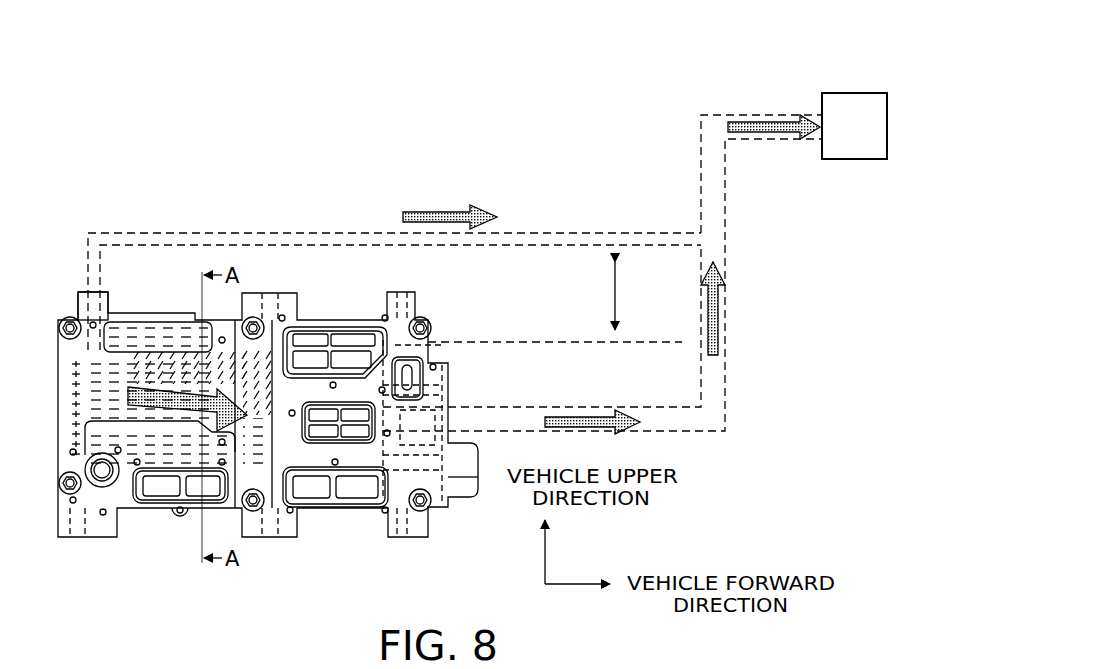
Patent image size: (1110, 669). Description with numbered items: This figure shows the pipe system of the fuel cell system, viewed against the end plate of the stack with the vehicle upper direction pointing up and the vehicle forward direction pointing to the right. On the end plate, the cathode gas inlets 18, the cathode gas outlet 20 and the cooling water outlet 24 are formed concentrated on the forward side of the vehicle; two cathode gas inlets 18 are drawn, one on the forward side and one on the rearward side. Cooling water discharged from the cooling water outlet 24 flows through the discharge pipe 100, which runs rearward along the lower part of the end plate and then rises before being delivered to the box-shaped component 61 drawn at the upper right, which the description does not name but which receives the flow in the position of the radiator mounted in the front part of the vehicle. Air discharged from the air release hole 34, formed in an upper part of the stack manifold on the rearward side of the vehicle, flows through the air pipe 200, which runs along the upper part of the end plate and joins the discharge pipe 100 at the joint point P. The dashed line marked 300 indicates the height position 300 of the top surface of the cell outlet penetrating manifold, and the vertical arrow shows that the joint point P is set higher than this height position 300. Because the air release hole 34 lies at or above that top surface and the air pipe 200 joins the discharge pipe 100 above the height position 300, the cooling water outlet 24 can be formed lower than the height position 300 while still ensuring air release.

The cathode gas inlet 18 is at (155, 490).
The cathode gas outlet 20 is at (318, 338).
The cooling water outlet 24 is at (353, 430).
The air release hole 34 is at (86, 290).
The blower 61 is at (853, 93).
The discharge pipe 100 is at (690, 434).
The air pipe 200 is at (289, 230).
The height position of the top surface of the cell outlet penetrating manifold 300 is at (483, 342).
The joint point P is at (732, 236).